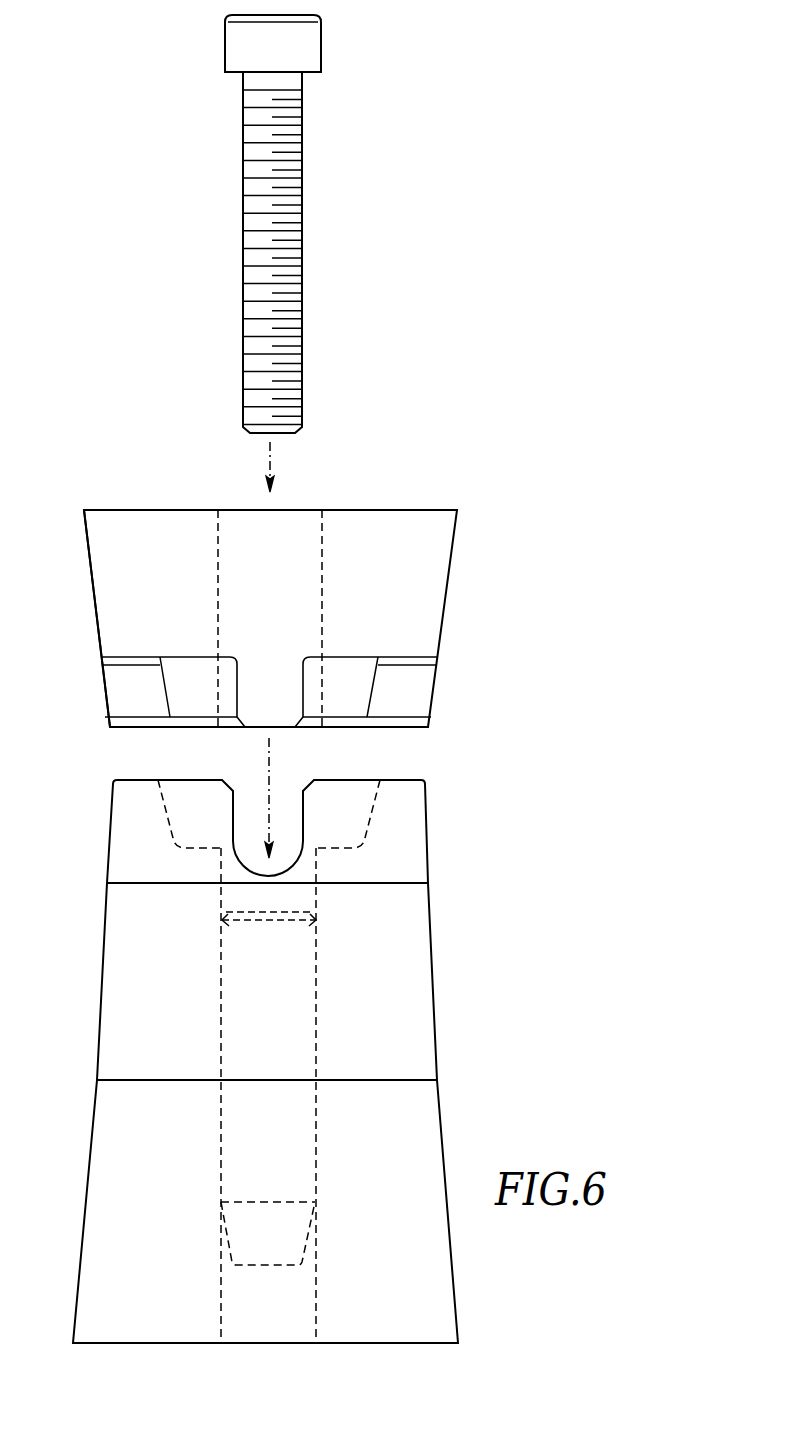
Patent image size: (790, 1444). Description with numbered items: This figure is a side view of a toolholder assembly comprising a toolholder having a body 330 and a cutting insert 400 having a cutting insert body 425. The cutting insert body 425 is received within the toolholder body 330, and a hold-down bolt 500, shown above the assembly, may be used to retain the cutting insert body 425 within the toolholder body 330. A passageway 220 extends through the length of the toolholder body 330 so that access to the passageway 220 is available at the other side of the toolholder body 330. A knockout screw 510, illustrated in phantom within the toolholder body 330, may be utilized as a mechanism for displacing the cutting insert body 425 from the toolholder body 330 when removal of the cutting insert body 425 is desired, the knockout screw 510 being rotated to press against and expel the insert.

The hold-down bolt 500 is at (307, 217).
The cutting insert 400 is at (437, 594).
The cutting insert body 425 is at (103, 585).
The toolholder body 330 is at (415, 930).
The passageway 220 is at (218, 899).
The knockout screw 510 is at (316, 987).